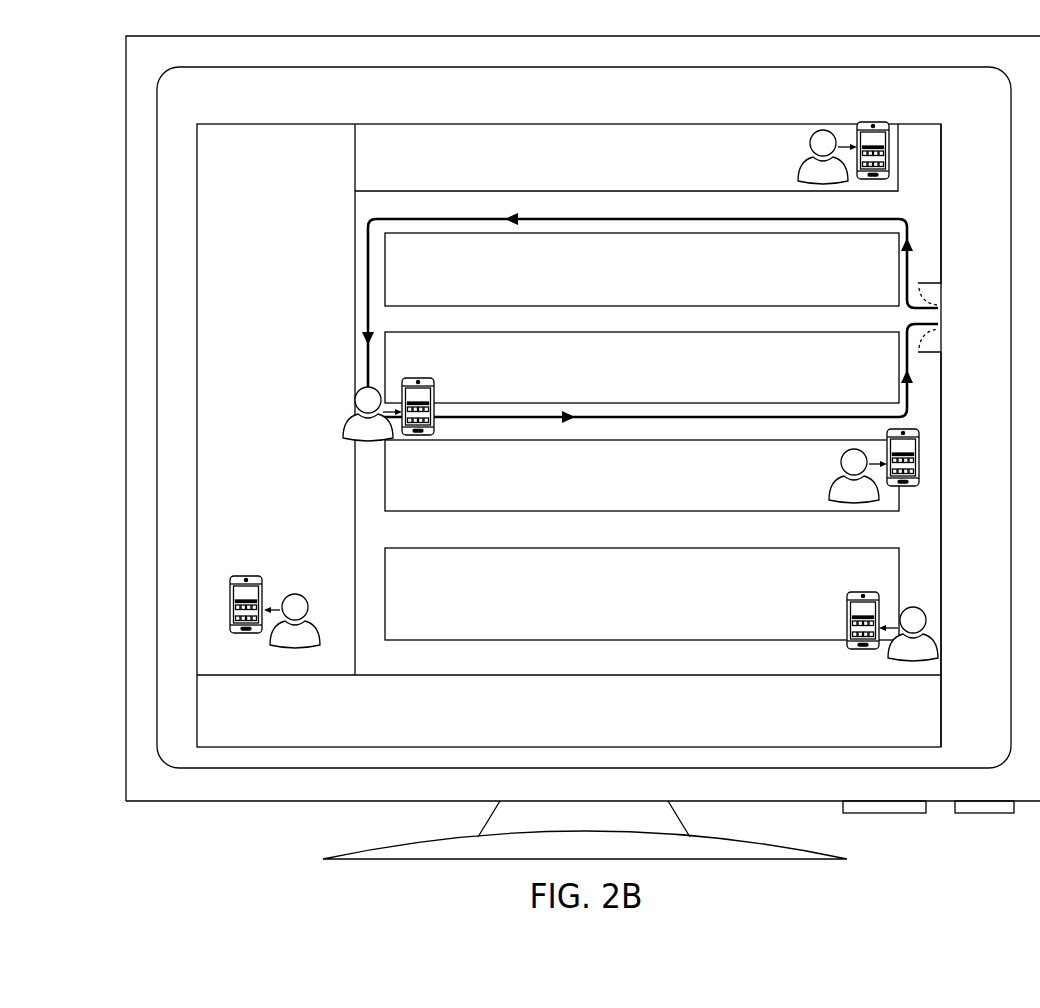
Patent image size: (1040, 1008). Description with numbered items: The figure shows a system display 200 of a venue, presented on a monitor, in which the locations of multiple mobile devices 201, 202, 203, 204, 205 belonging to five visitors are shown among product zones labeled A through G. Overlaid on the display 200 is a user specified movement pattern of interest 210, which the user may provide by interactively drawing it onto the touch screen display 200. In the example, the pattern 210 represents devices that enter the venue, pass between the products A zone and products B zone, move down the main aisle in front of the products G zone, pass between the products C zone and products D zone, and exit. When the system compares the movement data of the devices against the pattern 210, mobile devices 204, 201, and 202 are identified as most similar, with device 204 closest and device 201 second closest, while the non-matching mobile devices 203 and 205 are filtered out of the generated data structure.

The system display 200 is at (406, 117).
The mobile device 201 is at (905, 429).
The mobile device 202 is at (873, 122).
The mobile device 203 is at (847, 610).
The mobile device 204 is at (417, 378).
The mobile device 205 is at (250, 576).
The user specified movement pattern of interest 210 is at (908, 218).